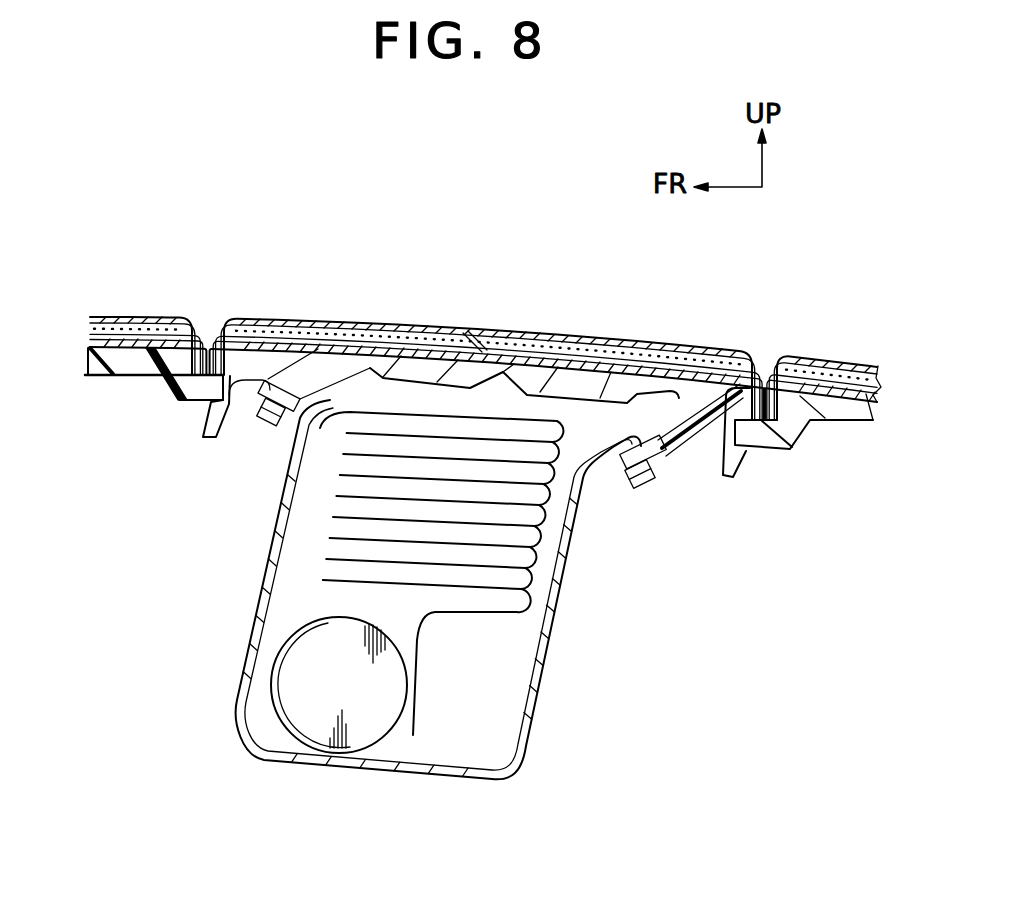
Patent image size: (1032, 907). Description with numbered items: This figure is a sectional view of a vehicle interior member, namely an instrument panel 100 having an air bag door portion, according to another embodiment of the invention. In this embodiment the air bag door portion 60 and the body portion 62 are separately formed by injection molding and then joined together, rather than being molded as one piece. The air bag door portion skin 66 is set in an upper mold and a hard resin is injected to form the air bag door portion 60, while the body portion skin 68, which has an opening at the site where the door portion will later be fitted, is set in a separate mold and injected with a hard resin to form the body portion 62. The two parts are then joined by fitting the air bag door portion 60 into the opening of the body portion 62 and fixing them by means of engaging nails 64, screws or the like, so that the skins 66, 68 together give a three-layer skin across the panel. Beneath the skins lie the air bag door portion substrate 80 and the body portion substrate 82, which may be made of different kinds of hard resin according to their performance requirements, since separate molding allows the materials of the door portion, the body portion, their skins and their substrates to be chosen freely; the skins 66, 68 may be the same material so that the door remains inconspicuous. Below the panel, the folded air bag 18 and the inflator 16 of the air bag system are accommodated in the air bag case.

The instrument panel 100 is at (483, 304).
The body portion 62 is at (186, 313).
The air bag door portion 60 is at (170, 243).
The body portion skin 68 is at (127, 316).
The air bag door portion skin 66 is at (560, 335).
The body portion substrate 82 is at (118, 378).
The engaging nail 64 is at (208, 408).
The air bag door portion substrate 80 is at (574, 400).
The air bag 18 is at (430, 620).
The inflator 16 is at (385, 688).